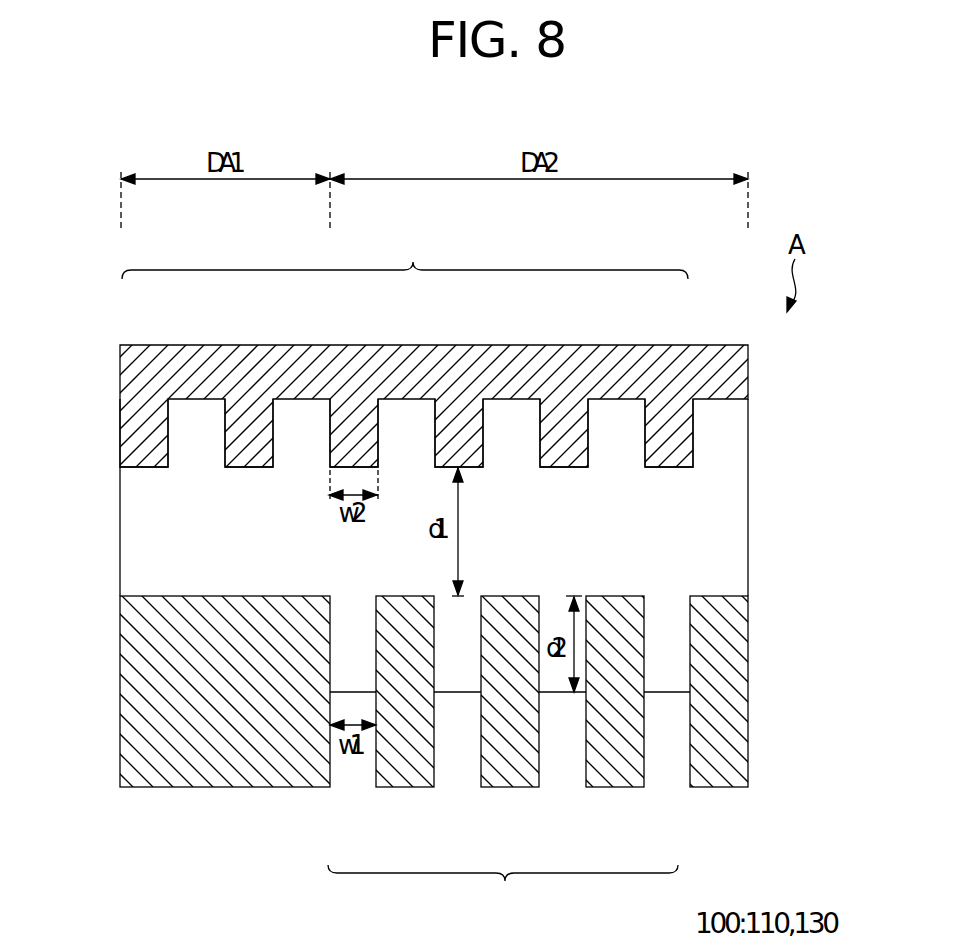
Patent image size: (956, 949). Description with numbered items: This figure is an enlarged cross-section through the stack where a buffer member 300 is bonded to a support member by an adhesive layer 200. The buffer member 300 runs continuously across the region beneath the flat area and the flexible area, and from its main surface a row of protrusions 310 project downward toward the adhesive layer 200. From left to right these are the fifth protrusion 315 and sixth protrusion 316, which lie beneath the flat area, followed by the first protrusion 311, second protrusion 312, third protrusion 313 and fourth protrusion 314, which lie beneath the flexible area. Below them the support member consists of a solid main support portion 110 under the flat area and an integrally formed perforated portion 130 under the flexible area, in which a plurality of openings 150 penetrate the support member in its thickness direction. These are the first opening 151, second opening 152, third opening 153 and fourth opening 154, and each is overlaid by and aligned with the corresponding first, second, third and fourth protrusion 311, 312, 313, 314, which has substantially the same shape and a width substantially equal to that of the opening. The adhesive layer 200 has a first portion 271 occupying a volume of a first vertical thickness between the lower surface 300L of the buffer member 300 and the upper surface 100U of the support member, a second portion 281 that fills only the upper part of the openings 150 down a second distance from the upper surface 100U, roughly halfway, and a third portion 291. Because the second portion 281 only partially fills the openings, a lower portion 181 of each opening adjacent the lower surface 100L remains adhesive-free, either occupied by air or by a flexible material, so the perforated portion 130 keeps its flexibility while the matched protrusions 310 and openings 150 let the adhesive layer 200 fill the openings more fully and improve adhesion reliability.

The buffer member 300 is at (745, 376).
The protrusions 310 is at (405, 257).
The first protrusion 311 is at (353, 413).
The second protrusion 312 is at (457, 413).
The third protrusion 313 is at (562, 413).
The fourth protrusion 314 is at (666, 413).
The fifth protrusion 315 is at (143, 413).
The sixth protrusion 316 is at (247, 413).
The lower surface of the buffer member 300L is at (141, 478).
The adhesive layer 200 is at (745, 516).
The third portion 291 is at (616, 443).
The second portion 281 is at (665, 615).
The first portion 271 is at (650, 553).
The lower portion of the opening 181 is at (690, 761).
The upper surface of the support member 100U is at (185, 585).
The lower surface of the support member 100L is at (728, 790).
The main support portion 110 is at (232, 780).
The perforated portion 130 is at (740, 705).
The openings 150 is at (503, 887).
The first opening 151 is at (347, 798).
The second opening 152 is at (452, 798).
The third opening 153 is at (557, 798).
The fourth opening 154 is at (663, 797).